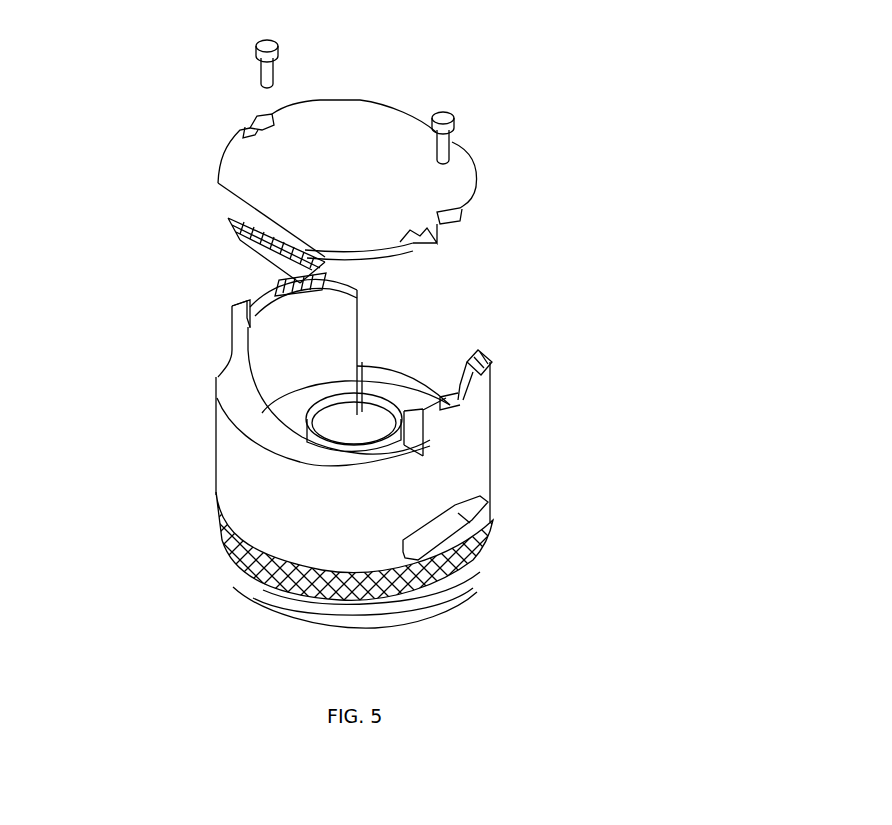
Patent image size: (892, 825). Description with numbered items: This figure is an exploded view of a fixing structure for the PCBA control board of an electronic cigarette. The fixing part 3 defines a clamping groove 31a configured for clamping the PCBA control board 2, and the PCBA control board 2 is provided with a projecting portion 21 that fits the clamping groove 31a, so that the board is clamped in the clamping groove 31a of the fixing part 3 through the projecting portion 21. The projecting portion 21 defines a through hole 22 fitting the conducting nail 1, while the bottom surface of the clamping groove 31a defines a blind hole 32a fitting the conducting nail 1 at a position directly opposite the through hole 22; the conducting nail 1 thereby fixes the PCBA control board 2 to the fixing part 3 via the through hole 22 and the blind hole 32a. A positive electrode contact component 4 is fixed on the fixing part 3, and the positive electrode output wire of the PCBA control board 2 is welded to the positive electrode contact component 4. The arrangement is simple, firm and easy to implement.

The conducting nail 1 is at (280, 60).
The PCBA control board 2 is at (275, 178).
The projecting portion 21 is at (297, 100).
The through hole 22 is at (254, 110).
The fixing part 3 is at (243, 480).
The clamping groove 31a is at (272, 280).
The blind hole 32a is at (256, 305).
The positive electrode contact component 4 is at (347, 417).